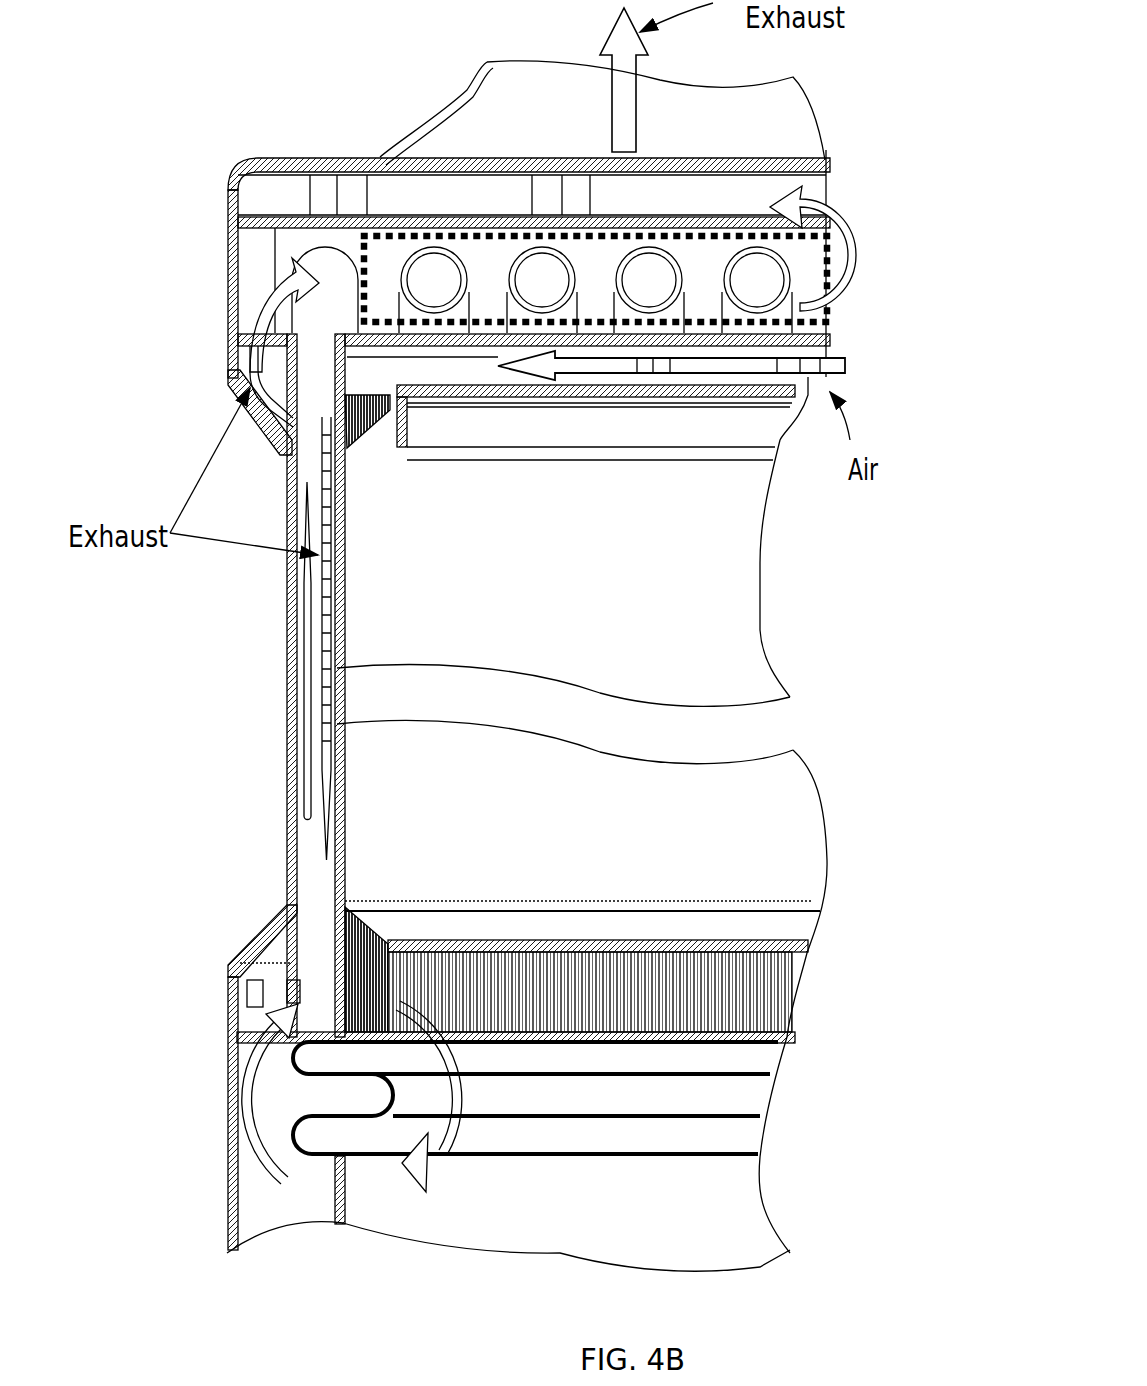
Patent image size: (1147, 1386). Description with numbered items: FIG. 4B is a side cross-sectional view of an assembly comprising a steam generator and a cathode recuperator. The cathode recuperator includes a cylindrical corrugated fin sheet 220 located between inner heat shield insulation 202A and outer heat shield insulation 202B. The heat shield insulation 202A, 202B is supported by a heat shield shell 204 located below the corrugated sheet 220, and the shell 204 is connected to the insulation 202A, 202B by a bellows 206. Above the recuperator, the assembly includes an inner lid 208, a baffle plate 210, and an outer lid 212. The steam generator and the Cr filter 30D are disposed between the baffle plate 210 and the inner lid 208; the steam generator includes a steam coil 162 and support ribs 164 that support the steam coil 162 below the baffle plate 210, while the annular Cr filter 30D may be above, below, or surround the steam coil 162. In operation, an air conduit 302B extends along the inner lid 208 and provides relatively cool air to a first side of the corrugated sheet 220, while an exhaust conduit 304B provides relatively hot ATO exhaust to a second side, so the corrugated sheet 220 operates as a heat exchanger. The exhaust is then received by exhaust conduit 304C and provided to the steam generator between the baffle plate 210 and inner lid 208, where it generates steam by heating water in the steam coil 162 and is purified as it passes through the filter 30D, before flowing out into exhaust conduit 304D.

The Cr filter 30D is at (840, 290).
The steam coil 162 is at (530, 243).
The support ribs 164 is at (413, 245).
The inner heat shield insulation 202A is at (333, 672).
The outer heat shield insulation 202B is at (312, 858).
The heat shield shell 204 is at (215, 1108).
The bellows 206 is at (735, 1100).
The inner lid 208 is at (558, 405).
The baffle plate 210 is at (680, 220).
The outer lid 212 is at (822, 172).
The corrugated fin sheet 220 is at (770, 988).
The air conduit 302B is at (458, 370).
The exhaust conduit 304B is at (290, 1195).
The exhaust conduit 304C is at (235, 375).
The exhaust conduit 304D is at (790, 135).